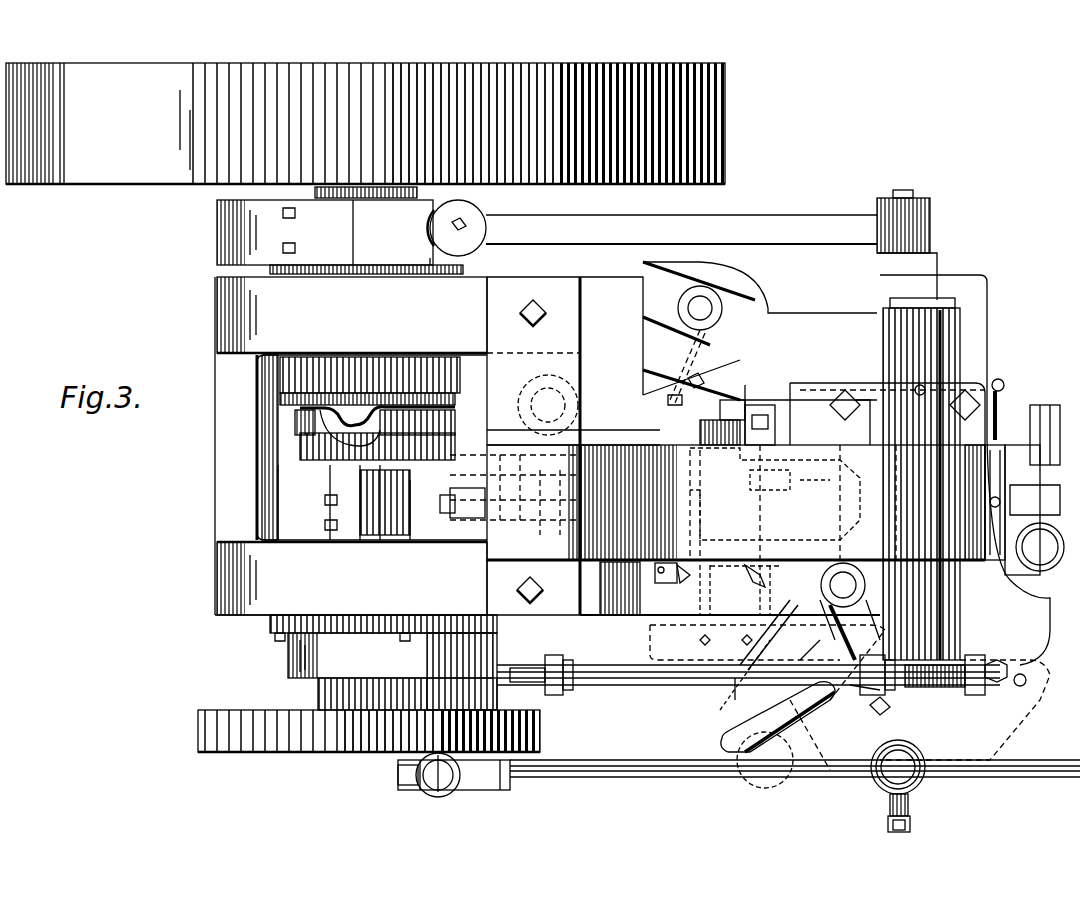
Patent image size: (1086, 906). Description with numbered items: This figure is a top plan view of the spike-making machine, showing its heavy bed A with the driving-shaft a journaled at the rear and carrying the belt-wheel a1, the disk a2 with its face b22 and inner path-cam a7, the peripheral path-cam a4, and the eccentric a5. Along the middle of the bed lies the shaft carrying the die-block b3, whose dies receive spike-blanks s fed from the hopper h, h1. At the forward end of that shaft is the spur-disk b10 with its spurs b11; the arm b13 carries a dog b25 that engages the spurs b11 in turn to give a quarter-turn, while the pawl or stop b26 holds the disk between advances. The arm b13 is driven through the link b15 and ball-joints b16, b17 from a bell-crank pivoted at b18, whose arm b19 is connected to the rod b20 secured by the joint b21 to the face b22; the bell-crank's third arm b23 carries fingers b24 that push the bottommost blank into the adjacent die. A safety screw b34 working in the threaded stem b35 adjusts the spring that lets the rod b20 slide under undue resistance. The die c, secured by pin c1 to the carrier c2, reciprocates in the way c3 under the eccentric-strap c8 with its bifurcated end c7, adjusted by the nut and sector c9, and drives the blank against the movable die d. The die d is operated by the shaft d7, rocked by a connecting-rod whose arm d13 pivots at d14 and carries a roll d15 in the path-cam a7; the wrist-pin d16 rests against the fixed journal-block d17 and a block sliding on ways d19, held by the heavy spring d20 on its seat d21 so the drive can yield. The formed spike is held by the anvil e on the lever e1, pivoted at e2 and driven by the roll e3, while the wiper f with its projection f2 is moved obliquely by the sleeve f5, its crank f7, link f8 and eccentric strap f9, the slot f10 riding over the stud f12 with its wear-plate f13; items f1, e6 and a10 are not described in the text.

The belt-wheel a1 is at (128, 70).
The driving-shaft a is at (455, 197).
The eccentric a5 is at (374, 232).
The eccentric strap f9 is at (240, 231).
The link f8 is at (763, 225).
The diagonal slot f10 is at (690, 300).
The stud f12 is at (715, 310).
The wear-plate f13 is at (659, 303).
The lever f1 is at (748, 385).
The wiper f is at (705, 398).
The wiping projection f2 is at (657, 389).
The crank f7 is at (930, 275).
The shaft d7 is at (935, 320).
The sleeve f5 is at (945, 345).
The ball-joint b17 is at (1060, 440).
The arm or crank b13 is at (1055, 410).
The spike-blank s is at (1000, 380).
The pawl or stop b26 is at (1005, 445).
The dog b25 is at (1025, 445).
The bed A is at (736, 502).
The die-block b3 is at (806, 472).
The anvil or discharger e is at (690, 450).
The die c is at (743, 477).
The nut and sector c9 is at (588, 455).
The carrier c2 is at (660, 525).
The spur-disk b10 is at (985, 465).
The link b15 is at (1002, 502).
The spur b11 is at (990, 502).
The ball-joint b16 is at (1048, 565).
The pivot e2 is at (548, 400).
The lever e1 is at (598, 410).
The pin e6 is at (558, 433).
The roll e3 is at (372, 447).
The peripheral path-cam a4 is at (310, 420).
The eccentric-strap c8 is at (305, 510).
The bifurcated end c7 is at (410, 480).
The way c3 is at (473, 515).
The pin c1 is at (516, 582).
The hopper h is at (672, 586).
The hopper h1 is at (752, 577).
The pivot b18 is at (845, 565).
The movable die d is at (384, 655).
The disk a2 is at (200, 733).
The path-cam a7 is at (247, 712).
The rod a10 is at (648, 683).
The roll d15 is at (568, 665).
The arm d13 is at (545, 700).
The wrist-pin d16 is at (920, 700).
The spring d20 is at (950, 655).
The seat d21 is at (985, 665).
The pivot d14 is at (965, 600).
The ways d19 is at (940, 715).
The fixed journal-block d17 is at (875, 715).
The third arm b23 is at (735, 735).
The rod b20 is at (835, 765).
The arm b19 is at (850, 712).
The fingers b24 is at (770, 655).
The face b22 is at (372, 752).
The joint b21 is at (435, 790).
The threaded stem b35 is at (908, 805).
The screw b34 is at (910, 828).